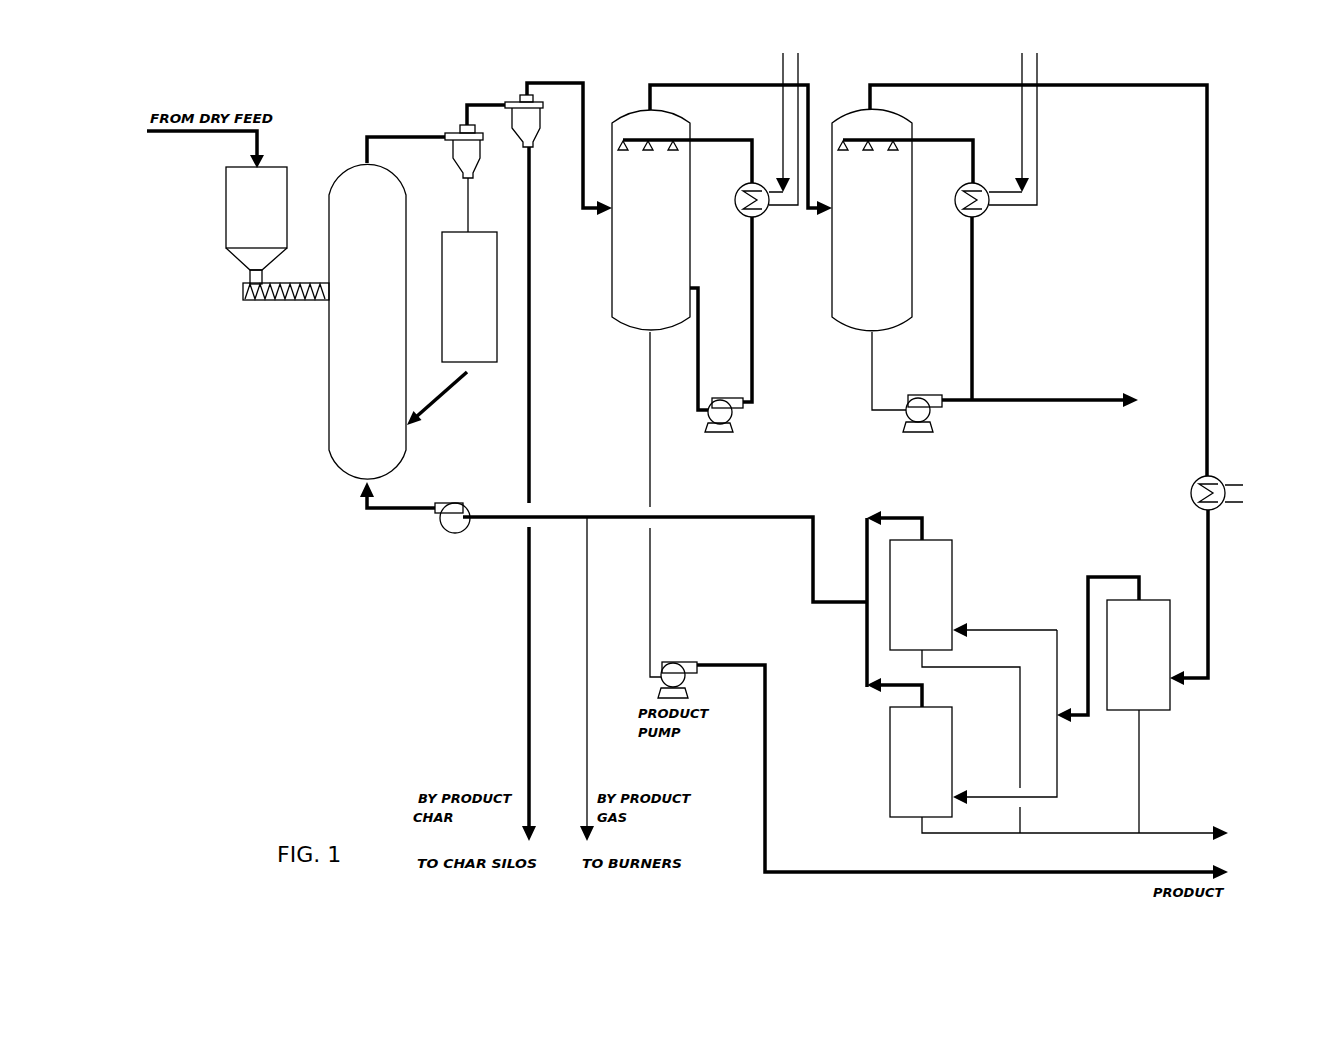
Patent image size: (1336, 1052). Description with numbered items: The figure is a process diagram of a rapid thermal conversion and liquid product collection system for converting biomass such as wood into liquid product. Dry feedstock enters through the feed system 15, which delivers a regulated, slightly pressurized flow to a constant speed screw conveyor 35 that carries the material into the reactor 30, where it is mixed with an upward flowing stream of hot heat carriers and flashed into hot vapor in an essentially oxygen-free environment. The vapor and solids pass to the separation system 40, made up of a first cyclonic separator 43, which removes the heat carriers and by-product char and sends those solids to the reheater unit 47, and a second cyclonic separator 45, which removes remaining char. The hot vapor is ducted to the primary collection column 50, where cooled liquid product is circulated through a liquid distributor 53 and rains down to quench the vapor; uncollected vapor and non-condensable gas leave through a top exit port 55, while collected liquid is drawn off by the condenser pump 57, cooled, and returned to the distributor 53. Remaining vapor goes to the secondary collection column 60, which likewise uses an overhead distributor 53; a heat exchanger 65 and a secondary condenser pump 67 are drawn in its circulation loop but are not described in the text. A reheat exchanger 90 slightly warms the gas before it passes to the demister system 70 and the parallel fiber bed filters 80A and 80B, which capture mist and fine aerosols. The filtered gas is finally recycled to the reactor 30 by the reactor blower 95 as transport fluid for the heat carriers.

The feed system 15 is at (225, 225).
The reactor 30 is at (407, 244).
The screw conveyor 35 is at (268, 303).
The separation system 40 is at (470, 78).
The first cyclonic separator 43 is at (484, 165).
The second cyclonic separator 45 is at (545, 133).
The reheater unit 47 is at (498, 355).
The primary collection column 50 is at (613, 291).
The liquid distributor 53 is at (660, 146).
The top exit port 55 is at (770, 212).
The condenser pump 57 is at (771, 449).
The secondary collection column 60 is at (832, 294).
The secondary condenser heat exchanger 65 is at (993, 212).
The secondary condenser pump 67 is at (1019, 443).
The demister system 70 is at (1165, 715).
The fiber bed 80A is at (948, 538).
The fiber bed 80B is at (947, 713).
The reheat exchanger 90 is at (1195, 478).
The reactor blower 95 is at (613, 584).